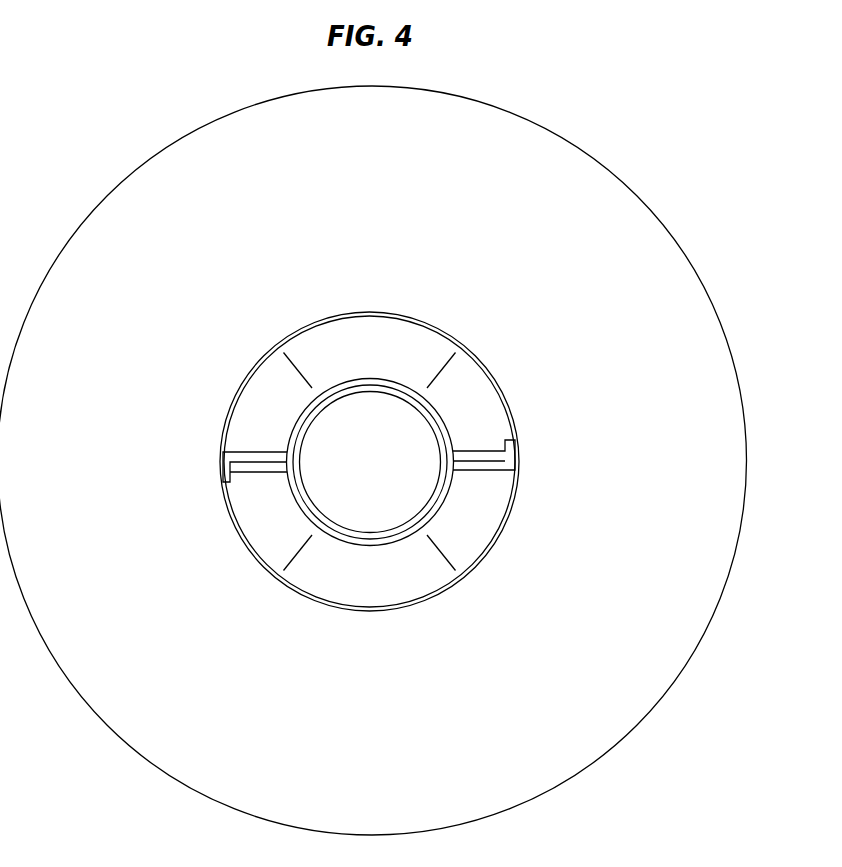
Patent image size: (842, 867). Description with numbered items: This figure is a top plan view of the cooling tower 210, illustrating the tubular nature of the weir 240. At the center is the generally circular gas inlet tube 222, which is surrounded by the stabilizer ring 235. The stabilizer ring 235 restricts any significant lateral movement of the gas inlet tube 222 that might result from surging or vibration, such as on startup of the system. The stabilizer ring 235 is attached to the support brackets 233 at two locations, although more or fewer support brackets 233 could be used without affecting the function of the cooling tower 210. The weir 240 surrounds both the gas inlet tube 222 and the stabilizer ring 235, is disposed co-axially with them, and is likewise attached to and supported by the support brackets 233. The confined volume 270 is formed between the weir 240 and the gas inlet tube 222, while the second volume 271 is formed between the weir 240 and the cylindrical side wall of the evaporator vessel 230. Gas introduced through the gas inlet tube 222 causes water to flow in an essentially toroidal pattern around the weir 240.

The cooling tower 210 is at (585, 88).
The evaporator vessel 230 is at (672, 233).
The second volume 271 is at (668, 343).
The weir 240 is at (490, 367).
The confined volume 270 is at (282, 423).
The stabilizer ring 235 is at (382, 430).
The gas inlet tube 222 is at (370, 462).
The support brackets 233 is at (477, 472).